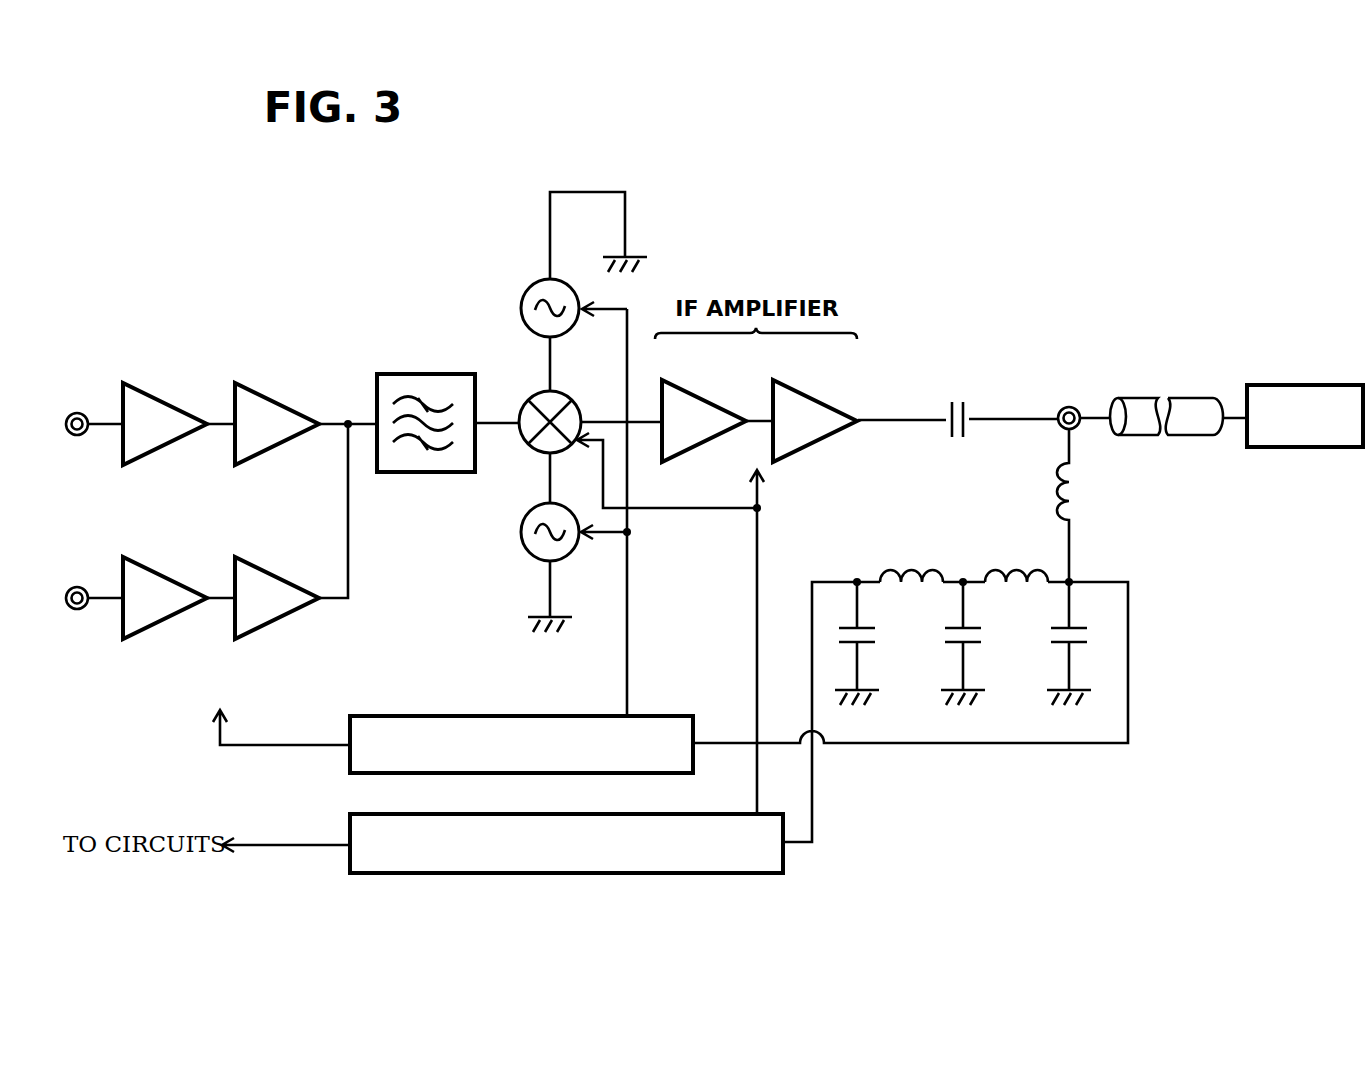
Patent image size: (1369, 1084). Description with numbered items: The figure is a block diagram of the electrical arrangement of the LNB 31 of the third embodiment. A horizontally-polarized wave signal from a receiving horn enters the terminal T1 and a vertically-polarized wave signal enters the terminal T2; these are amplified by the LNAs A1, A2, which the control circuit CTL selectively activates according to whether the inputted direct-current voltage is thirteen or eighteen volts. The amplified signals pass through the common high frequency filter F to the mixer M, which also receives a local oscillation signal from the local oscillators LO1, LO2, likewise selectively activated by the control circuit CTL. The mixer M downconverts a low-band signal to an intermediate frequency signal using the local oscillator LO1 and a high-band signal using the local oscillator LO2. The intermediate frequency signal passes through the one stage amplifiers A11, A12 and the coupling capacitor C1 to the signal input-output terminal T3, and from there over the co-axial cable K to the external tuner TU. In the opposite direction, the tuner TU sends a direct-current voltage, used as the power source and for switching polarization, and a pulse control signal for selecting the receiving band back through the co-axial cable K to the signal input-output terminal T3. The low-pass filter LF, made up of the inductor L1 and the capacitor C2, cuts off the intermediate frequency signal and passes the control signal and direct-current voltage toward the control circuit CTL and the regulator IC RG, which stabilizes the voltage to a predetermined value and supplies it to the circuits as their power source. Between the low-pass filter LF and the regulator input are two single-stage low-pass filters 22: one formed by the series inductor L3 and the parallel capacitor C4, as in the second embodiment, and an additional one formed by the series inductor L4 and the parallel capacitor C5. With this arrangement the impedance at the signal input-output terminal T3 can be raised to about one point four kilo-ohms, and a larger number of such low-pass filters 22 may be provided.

The LNB 31 is at (188, 198).
The terminal T1 is at (78, 412).
The terminal T2 is at (77, 610).
The LNA A1 is at (117, 369).
The LNA A2 is at (117, 649).
The high frequency filter F is at (424, 374).
The mixer M is at (530, 400).
The local oscillator LO1 is at (530, 290).
The local oscillator LO2 is at (521, 532).
The one stage amplifier A11 is at (717, 405).
The one stage amplifier A12 is at (830, 407).
The coupling capacitor C1 is at (950, 402).
The signal input-output terminal T3 is at (1069, 405).
The co-axial cable K is at (1200, 397).
The tuner TU is at (1302, 385).
The inductor L1 is at (1084, 472).
The low-pass filter LF is at (1150, 460).
The low-pass filter 22 is at (873, 543).
The inductor L4 is at (909, 572).
The inductor L3 is at (1012, 572).
The capacitor C5 is at (872, 646).
The capacitor C4 is at (978, 646).
The capacitor C2 is at (1083, 646).
The control circuit CTL is at (410, 716).
The regulator IC RG is at (415, 874).